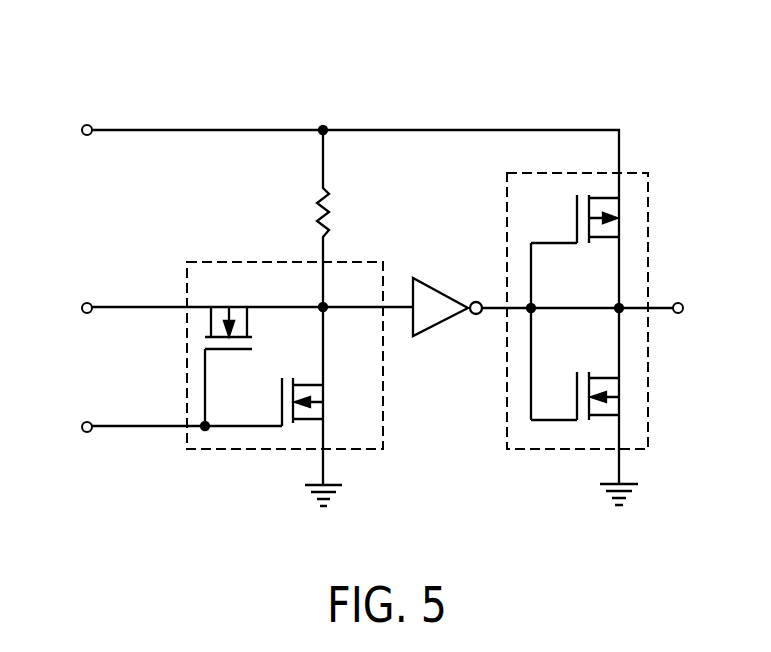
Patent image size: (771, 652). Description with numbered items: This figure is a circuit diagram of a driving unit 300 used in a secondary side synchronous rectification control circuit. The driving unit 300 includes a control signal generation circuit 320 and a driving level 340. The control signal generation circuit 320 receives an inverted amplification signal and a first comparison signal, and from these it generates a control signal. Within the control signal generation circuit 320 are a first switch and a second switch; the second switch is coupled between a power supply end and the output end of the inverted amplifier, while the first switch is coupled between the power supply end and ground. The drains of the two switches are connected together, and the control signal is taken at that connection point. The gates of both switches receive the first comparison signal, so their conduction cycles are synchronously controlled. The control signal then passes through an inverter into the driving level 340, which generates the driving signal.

The driving unit 300 is at (375, 265).
The control signal generation circuit 320 is at (342, 262).
The driving level 340 is at (637, 172).